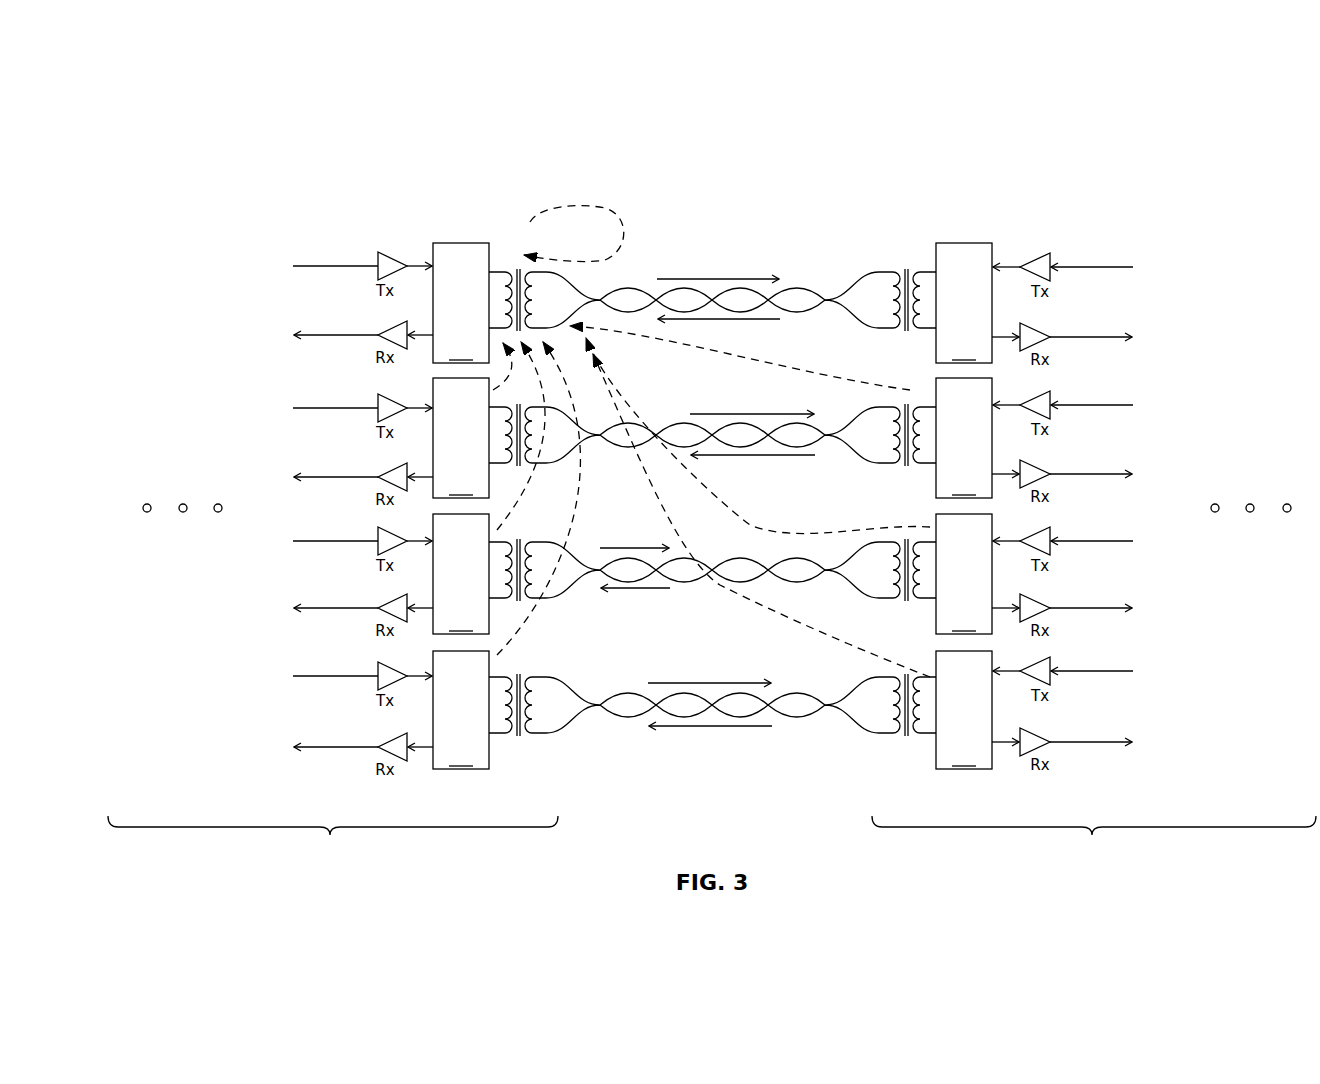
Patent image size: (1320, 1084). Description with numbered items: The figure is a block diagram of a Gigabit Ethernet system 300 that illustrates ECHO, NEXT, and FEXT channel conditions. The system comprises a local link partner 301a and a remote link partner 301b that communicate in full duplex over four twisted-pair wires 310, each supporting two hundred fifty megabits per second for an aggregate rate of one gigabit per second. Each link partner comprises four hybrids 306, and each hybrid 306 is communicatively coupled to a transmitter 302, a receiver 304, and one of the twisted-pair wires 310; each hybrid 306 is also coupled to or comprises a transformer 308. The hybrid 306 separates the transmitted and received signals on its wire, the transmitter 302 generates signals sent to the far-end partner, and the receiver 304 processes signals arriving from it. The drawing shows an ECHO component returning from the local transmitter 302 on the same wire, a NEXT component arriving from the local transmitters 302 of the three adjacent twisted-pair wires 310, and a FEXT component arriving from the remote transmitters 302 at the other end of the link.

The Gigabit Ethernet system 300 is at (367, 115).
The local link partner 301a is at (492, 826).
The remote link partner 301b is at (1053, 826).
The transmitter 302 is at (378, 262).
The receiver 304 is at (400, 321).
The hybrid 306 is at (712, 506).
The transformer 308 is at (893, 254).
The twisted-pair wire 310 is at (639, 268).